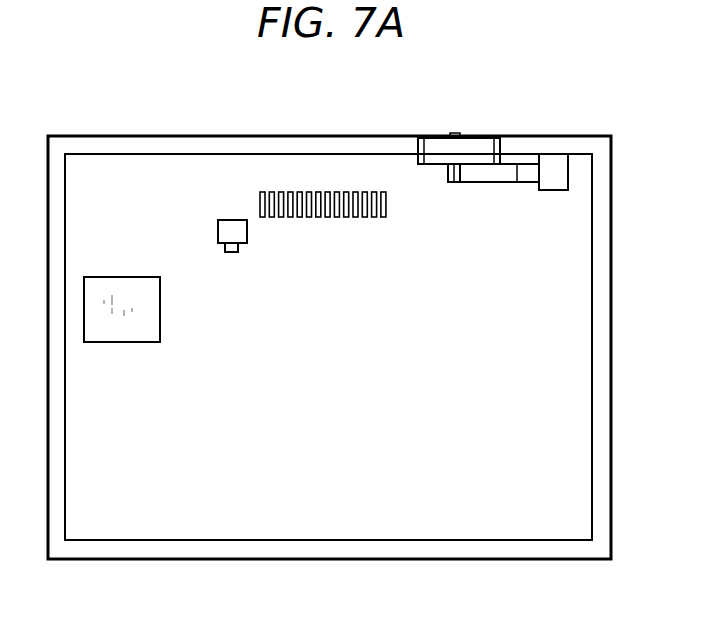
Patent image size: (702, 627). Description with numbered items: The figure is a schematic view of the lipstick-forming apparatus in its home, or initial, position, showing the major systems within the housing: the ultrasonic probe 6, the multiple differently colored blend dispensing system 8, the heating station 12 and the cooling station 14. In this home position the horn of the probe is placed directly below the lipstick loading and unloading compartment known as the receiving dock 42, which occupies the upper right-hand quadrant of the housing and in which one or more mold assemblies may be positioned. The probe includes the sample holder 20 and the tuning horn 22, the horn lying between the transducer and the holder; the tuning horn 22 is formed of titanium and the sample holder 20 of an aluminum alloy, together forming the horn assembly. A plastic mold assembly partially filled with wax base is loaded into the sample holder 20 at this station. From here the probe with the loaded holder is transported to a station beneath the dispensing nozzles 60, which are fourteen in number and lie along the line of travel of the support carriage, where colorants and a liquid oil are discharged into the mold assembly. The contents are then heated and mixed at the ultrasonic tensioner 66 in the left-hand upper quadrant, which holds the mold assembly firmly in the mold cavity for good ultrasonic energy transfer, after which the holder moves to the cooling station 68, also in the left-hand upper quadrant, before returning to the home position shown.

The ultrasonic probe 6 is at (530, 136).
The multiple differently colored blend dispensing system 8 is at (328, 252).
The heating station 12 is at (227, 184).
The cooling station 14 is at (127, 372).
The sample holder 20 is at (455, 182).
The tuning horn 22 is at (492, 173).
The receiving dock 42 is at (475, 155).
The dispensing nozzles 60 is at (318, 193).
The ultrasonic tensioner 66 is at (218, 233).
The cooling station 68 is at (160, 307).